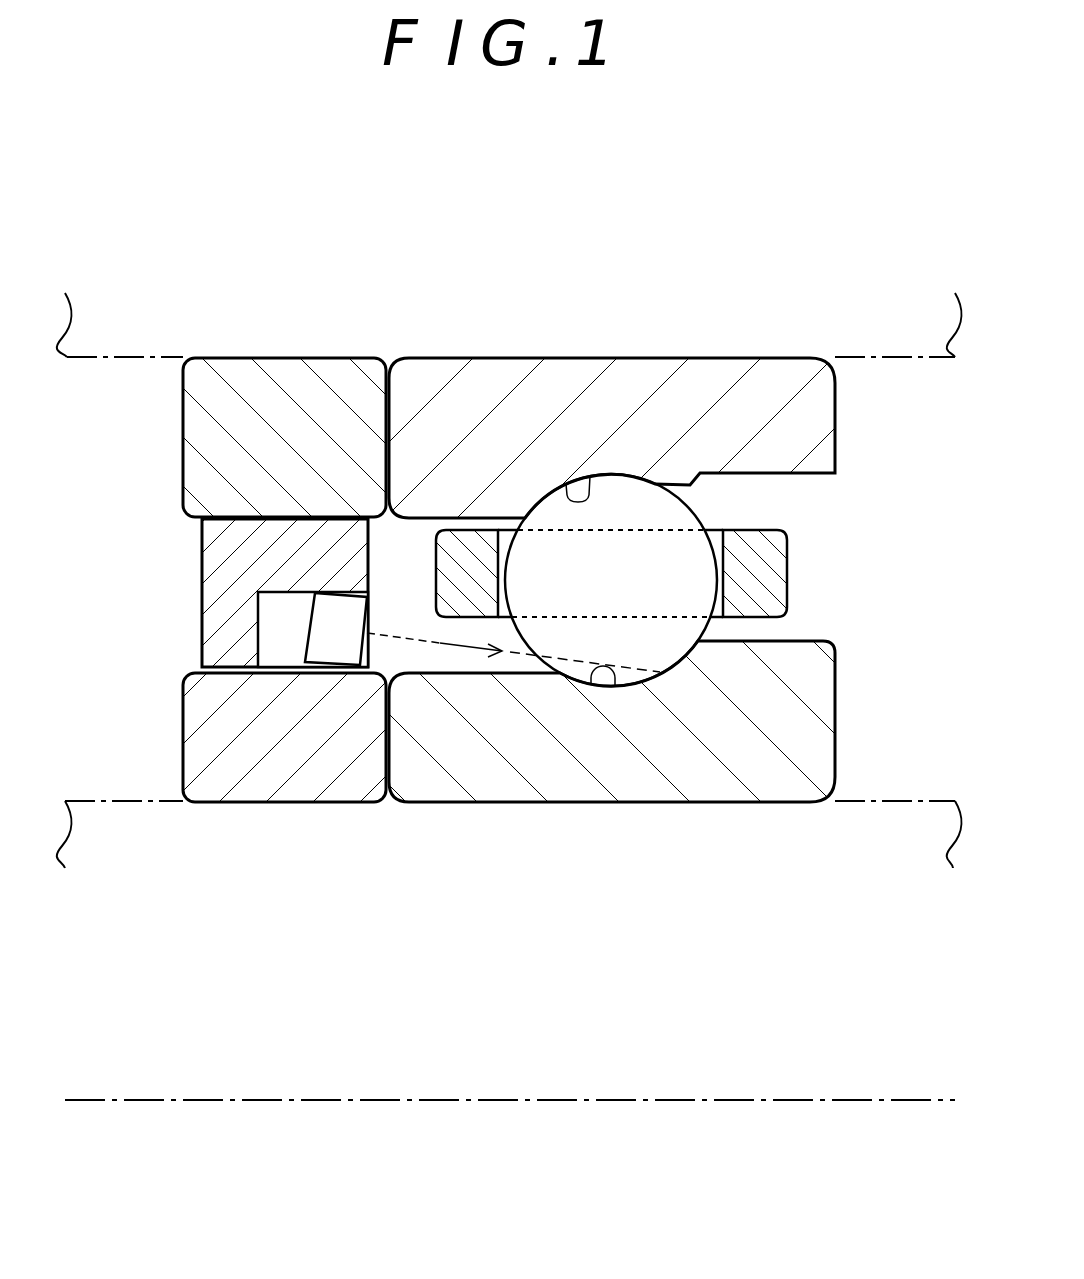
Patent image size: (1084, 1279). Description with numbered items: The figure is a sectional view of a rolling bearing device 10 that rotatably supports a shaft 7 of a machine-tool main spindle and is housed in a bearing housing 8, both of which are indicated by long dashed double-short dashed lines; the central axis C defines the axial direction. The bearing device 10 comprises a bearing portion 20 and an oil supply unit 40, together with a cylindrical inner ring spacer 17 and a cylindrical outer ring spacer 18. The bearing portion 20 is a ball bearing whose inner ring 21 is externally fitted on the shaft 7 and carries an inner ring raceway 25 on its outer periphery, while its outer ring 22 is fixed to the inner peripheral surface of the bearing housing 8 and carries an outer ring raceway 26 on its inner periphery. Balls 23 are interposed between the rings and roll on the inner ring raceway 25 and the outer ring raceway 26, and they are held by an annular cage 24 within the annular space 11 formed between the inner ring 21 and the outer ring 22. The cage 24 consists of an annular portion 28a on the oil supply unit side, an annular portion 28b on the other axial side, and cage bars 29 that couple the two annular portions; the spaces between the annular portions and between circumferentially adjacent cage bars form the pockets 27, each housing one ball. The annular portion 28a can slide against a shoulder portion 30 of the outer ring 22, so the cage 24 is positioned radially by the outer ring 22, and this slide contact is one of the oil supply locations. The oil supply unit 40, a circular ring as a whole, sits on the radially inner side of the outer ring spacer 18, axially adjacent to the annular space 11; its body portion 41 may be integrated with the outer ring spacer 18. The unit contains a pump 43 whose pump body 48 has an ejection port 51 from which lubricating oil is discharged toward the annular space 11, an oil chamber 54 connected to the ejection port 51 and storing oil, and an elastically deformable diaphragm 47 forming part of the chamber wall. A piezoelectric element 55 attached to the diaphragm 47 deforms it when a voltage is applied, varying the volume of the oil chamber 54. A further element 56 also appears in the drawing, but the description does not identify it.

The shaft 7 is at (98, 801).
The bearing housing 8 is at (98, 358).
The rolling bearing device 10 is at (612, 439).
The annular space 11 is at (413, 557).
The inner ring spacer 17 is at (307, 780).
The outer ring spacer 18 is at (292, 370).
The bearing portion 20 is at (612, 724).
The inner ring 21 is at (633, 780).
The outer ring 22 is at (625, 380).
The balls 23 is at (707, 522).
The cage 24 is at (656, 483).
The inner ring raceway 25 is at (590, 686).
The outer ring raceway 26 is at (566, 485).
The pockets 27 is at (716, 626).
The annular portion 28a is at (462, 558).
The annular portion 28b is at (773, 558).
The cage bars 29 is at (649, 529).
The shoulder portion 30 is at (500, 507).
The oil supply unit 40 is at (365, 621).
The body portion 41 is at (205, 532).
The pump 43 is at (310, 637).
The diaphragm 47 is at (345, 604).
The pump body 48 is at (368, 620).
The ejection port 51 is at (367, 633).
The oil chamber 54 is at (330, 617).
The piezoelectric element 55 is at (300, 640).
The end face 56 is at (370, 667).
The central axis C is at (830, 1100).